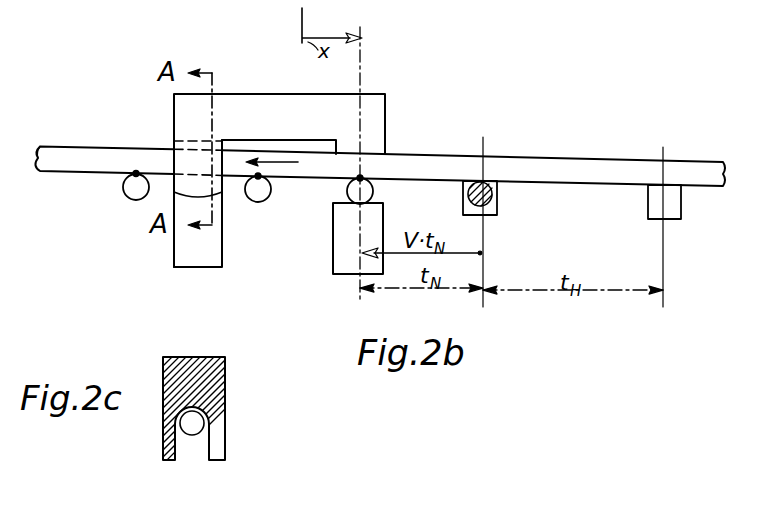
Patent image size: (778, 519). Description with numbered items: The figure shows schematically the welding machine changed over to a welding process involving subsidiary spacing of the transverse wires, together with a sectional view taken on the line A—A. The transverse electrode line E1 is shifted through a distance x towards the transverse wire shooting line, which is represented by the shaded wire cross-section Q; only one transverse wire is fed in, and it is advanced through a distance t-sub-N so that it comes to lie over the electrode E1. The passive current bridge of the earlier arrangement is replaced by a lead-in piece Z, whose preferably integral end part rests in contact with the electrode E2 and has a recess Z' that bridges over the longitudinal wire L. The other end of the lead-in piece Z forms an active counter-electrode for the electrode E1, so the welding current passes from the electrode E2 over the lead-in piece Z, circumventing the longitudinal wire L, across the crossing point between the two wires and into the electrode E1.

In FIG. 2B, the longitudinal wire L is at (540, 165).
In FIG. 2C, the longitudinal wire L is at (196, 422).
In FIG. 2B, the lead-in piece Z is at (279, 168).
In FIG. 2C, the recess Z' is at (171, 423).
In FIG. 2B, the transverse electrode line E1 is at (368, 213).
In FIG. 2B, the electrode E2 is at (207, 248).
In FIG. 2B, the transverse wire cross-section Q is at (127, 187).